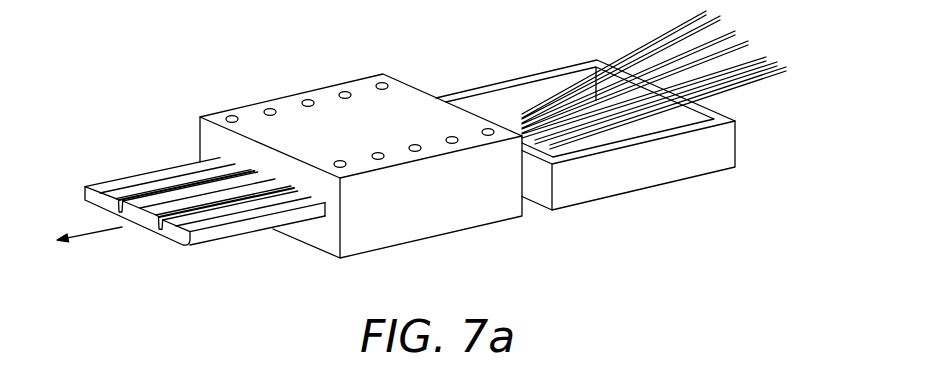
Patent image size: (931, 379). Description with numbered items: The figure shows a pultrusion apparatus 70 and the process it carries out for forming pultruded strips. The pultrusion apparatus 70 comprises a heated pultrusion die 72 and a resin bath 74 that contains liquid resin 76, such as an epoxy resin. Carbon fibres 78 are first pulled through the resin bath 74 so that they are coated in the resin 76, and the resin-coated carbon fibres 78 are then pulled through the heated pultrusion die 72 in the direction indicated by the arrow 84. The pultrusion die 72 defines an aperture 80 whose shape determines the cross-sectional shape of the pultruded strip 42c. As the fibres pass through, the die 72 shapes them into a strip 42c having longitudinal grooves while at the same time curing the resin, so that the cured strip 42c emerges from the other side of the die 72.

The pultrusion apparatus 70 is at (225, 79).
The heated pultrusion die 72 is at (325, 98).
The resin bath 74 is at (647, 175).
The liquid resin 76 is at (512, 100).
The carbon fibres 78 is at (763, 82).
The aperture 80 is at (327, 209).
The pultruded strip 42c is at (242, 230).
The arrow 84 is at (92, 237).